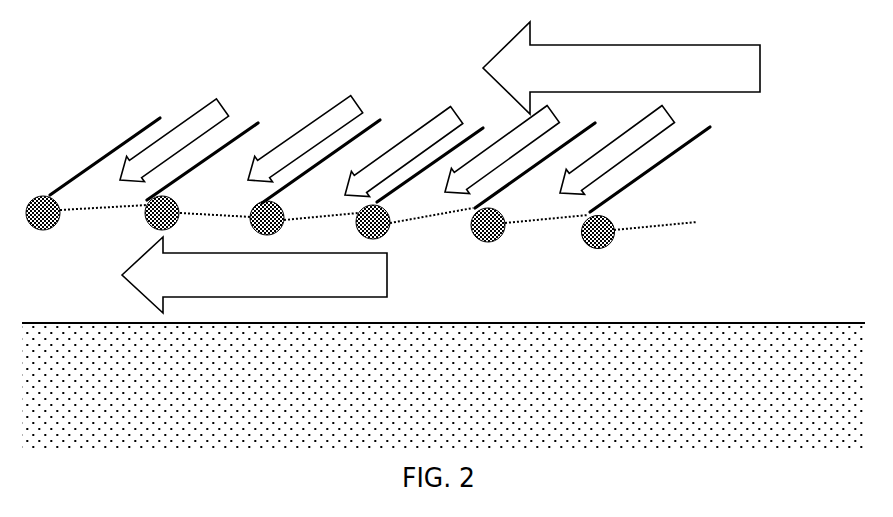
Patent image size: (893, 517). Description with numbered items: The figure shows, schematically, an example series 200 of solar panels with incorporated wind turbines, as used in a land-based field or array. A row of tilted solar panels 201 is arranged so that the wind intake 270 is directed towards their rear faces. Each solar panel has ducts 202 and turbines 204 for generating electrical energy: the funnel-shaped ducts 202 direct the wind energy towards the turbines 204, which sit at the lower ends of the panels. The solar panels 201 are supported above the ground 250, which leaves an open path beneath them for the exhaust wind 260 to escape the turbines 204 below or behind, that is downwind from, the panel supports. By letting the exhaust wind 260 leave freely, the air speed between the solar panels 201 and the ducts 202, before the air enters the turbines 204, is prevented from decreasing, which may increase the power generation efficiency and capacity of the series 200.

The series of solar panels with incorporated wind turbines 200 is at (166, 90).
The solar panels 201 is at (707, 203).
The ducts 202 is at (453, 244).
The turbines 204 is at (707, 252).
The ground 250 is at (503, 388).
The exhaust wind 260 is at (327, 286).
The wind intake 270 is at (724, 80).